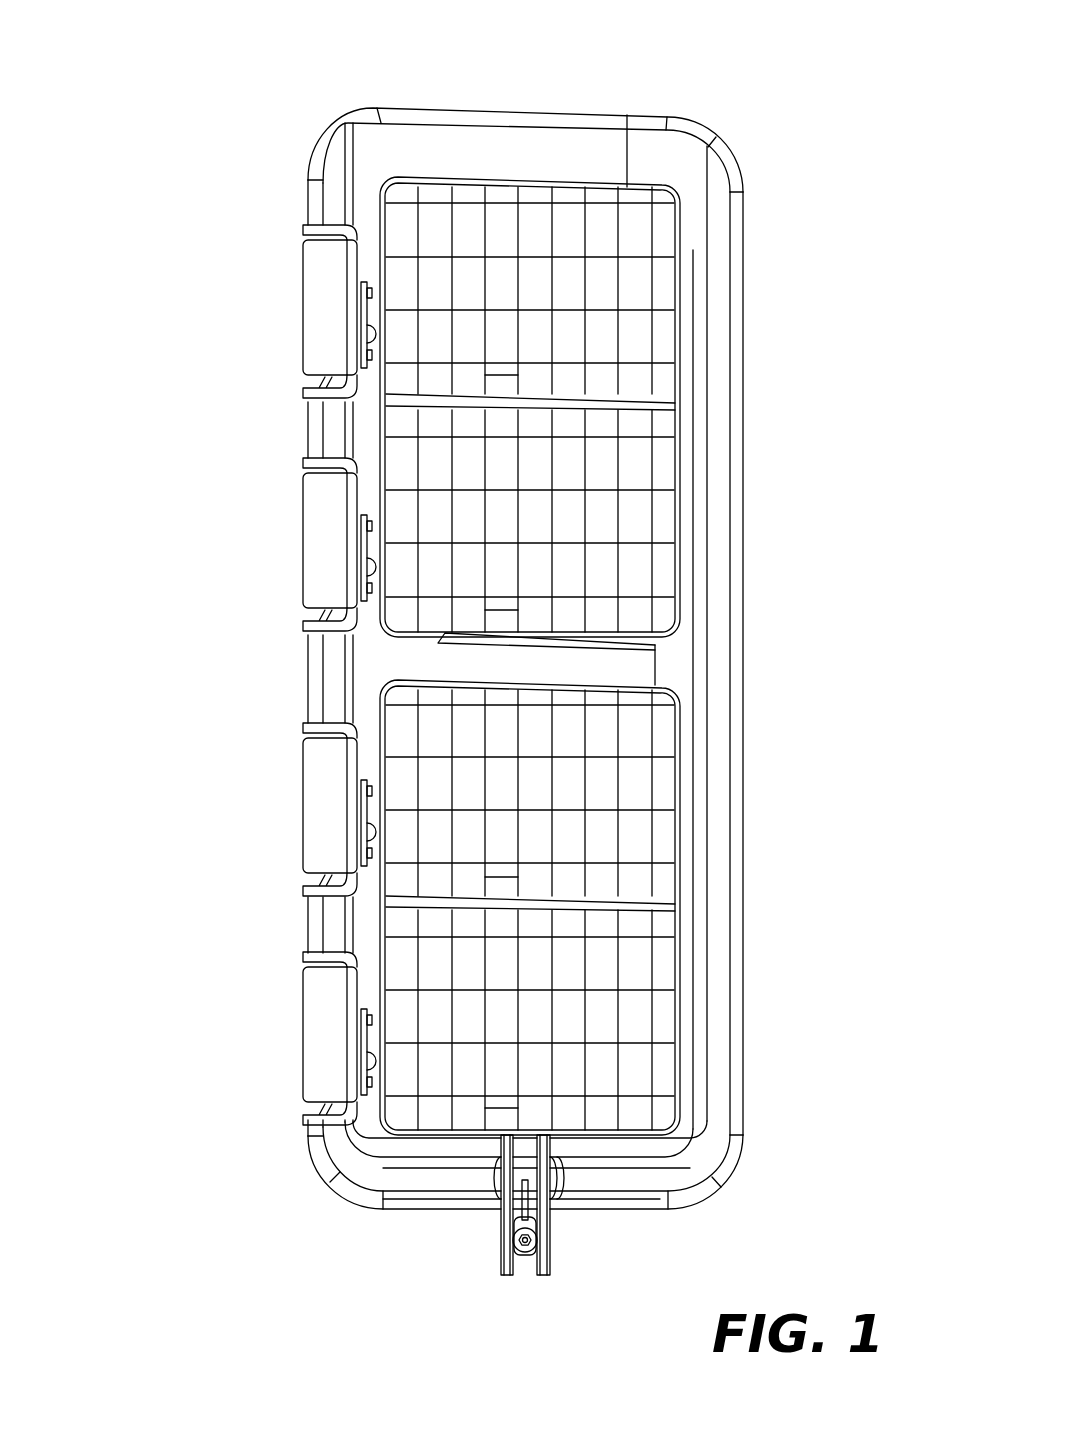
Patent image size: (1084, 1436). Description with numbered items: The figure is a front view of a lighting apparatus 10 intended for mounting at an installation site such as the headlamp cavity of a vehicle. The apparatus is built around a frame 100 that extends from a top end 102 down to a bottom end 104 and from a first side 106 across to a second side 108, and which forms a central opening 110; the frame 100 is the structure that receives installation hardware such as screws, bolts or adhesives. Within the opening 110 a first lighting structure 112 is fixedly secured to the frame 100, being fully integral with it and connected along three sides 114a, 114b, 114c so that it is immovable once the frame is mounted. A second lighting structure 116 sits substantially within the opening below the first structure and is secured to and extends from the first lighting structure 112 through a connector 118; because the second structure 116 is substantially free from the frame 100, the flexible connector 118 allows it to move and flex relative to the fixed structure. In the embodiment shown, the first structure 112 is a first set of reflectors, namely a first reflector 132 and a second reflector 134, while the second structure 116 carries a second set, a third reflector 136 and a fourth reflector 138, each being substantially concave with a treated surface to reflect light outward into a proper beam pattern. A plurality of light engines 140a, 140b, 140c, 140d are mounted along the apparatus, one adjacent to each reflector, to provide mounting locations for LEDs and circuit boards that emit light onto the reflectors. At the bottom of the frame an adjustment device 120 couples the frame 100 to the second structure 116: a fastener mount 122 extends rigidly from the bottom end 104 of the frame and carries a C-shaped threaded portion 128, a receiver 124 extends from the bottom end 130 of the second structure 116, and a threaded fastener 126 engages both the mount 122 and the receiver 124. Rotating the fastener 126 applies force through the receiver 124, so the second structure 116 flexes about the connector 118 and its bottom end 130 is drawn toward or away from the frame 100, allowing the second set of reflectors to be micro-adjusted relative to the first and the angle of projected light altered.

The lighting apparatus 10 is at (208, 44).
The frame 100 is at (314, 167).
The top end 102 is at (497, 80).
The bottom end 104 is at (382, 1218).
The first side 106 is at (282, 688).
The second side 108 is at (785, 680).
The central opening 110 is at (680, 675).
The first lighting structure 112 is at (712, 333).
The first connected side 114a is at (362, 442).
The second connected side 114b is at (583, 152).
The third connected side 114c is at (700, 276).
The second lighting structure 116 is at (712, 950).
The connector 118 is at (655, 660).
The adjustment device 120 is at (572, 1245).
The fastener mount 122 is at (530, 1210).
The receiver 124 is at (503, 1263).
The threaded fastener 126 is at (526, 1258).
The threaded portion 128 is at (517, 1218).
The bottom end 130 is at (640, 1150).
The first reflector 132 is at (682, 224).
The second reflector 134 is at (680, 472).
The third reflector 136 is at (680, 832).
The fourth reflector 138 is at (680, 1055).
The light engine 140a is at (305, 315).
The light engine 140b is at (305, 555).
The light engine 140c is at (305, 805).
The light engine 140d is at (305, 1025).